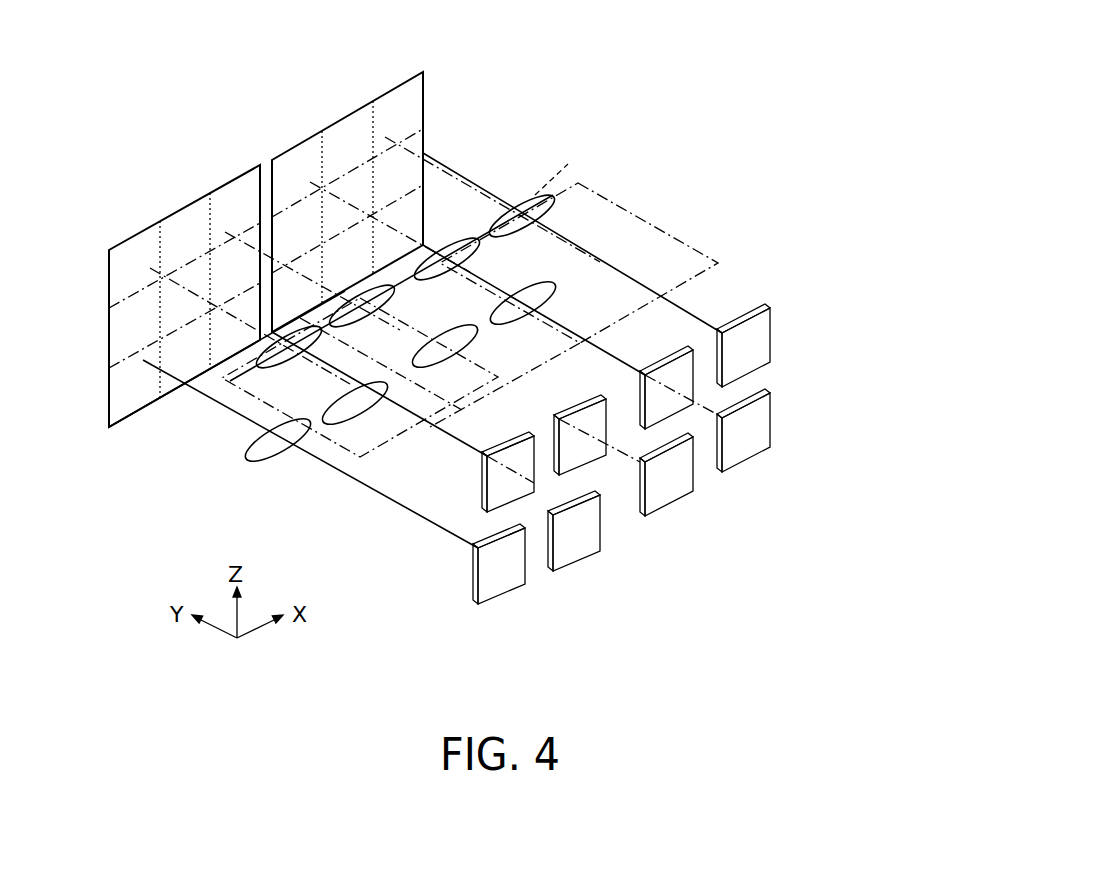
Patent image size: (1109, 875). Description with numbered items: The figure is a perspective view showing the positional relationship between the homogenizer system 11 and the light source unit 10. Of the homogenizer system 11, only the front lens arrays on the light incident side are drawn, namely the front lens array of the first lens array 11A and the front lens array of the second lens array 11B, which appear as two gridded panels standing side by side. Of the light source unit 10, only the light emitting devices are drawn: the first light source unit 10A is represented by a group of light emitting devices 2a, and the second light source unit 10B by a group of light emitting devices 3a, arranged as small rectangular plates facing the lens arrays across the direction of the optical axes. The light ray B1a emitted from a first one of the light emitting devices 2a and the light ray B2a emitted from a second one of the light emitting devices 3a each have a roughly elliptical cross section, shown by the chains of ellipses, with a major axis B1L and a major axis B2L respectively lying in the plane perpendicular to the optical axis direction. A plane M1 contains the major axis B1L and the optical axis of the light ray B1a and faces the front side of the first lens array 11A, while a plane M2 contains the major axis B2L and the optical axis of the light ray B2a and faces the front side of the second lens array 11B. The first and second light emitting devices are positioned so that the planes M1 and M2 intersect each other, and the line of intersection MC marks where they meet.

The homogenizer system 11 is at (443, 78).
The first lens array 11A is at (125, 242).
The second lens array 11B is at (285, 152).
The light ray B1a is at (295, 327).
The major axis B1L is at (262, 341).
The light ray B2a is at (516, 207).
The major axis B2L is at (572, 170).
The plane M1 is at (288, 401).
The plane M2 is at (642, 232).
The line of intersection MC is at (462, 408).
The light source unit 10 is at (802, 648).
The first light source unit 10A is at (583, 573).
The second light source unit 10B is at (722, 495).
The light emitting device 2a is at (498, 493).
The light emitting device 3a is at (758, 331).